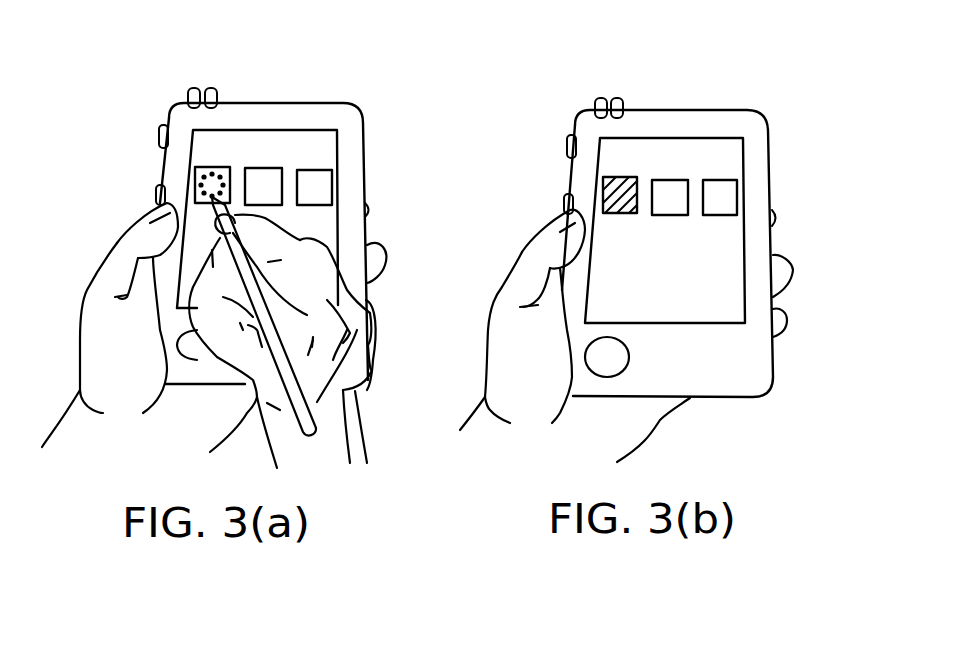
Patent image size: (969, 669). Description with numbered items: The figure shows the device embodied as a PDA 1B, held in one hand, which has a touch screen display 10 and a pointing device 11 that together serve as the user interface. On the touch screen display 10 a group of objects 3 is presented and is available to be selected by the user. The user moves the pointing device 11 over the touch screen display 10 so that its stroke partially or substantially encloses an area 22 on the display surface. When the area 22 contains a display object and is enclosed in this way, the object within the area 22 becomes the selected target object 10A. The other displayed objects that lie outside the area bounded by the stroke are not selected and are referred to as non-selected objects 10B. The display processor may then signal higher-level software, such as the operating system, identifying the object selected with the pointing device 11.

In FIG. 3A, the PDA 1B is at (253, 100).
In FIG. 3B, the PDA 1B is at (700, 108).
In FIG. 3A, the touch screen display 10 is at (320, 155).
In FIG. 3B, the touch screen display 10 is at (725, 165).
In FIG. 3A, the group of objects 3 is at (198, 187).
In FIG. 3A, the pointing device 11 is at (272, 348).
In FIG. 3B, the area 22 is at (620, 175).
In FIG. 3B, the selected target object 10A is at (600, 195).
In FIG. 3B, the non-selected object 10B is at (668, 215).